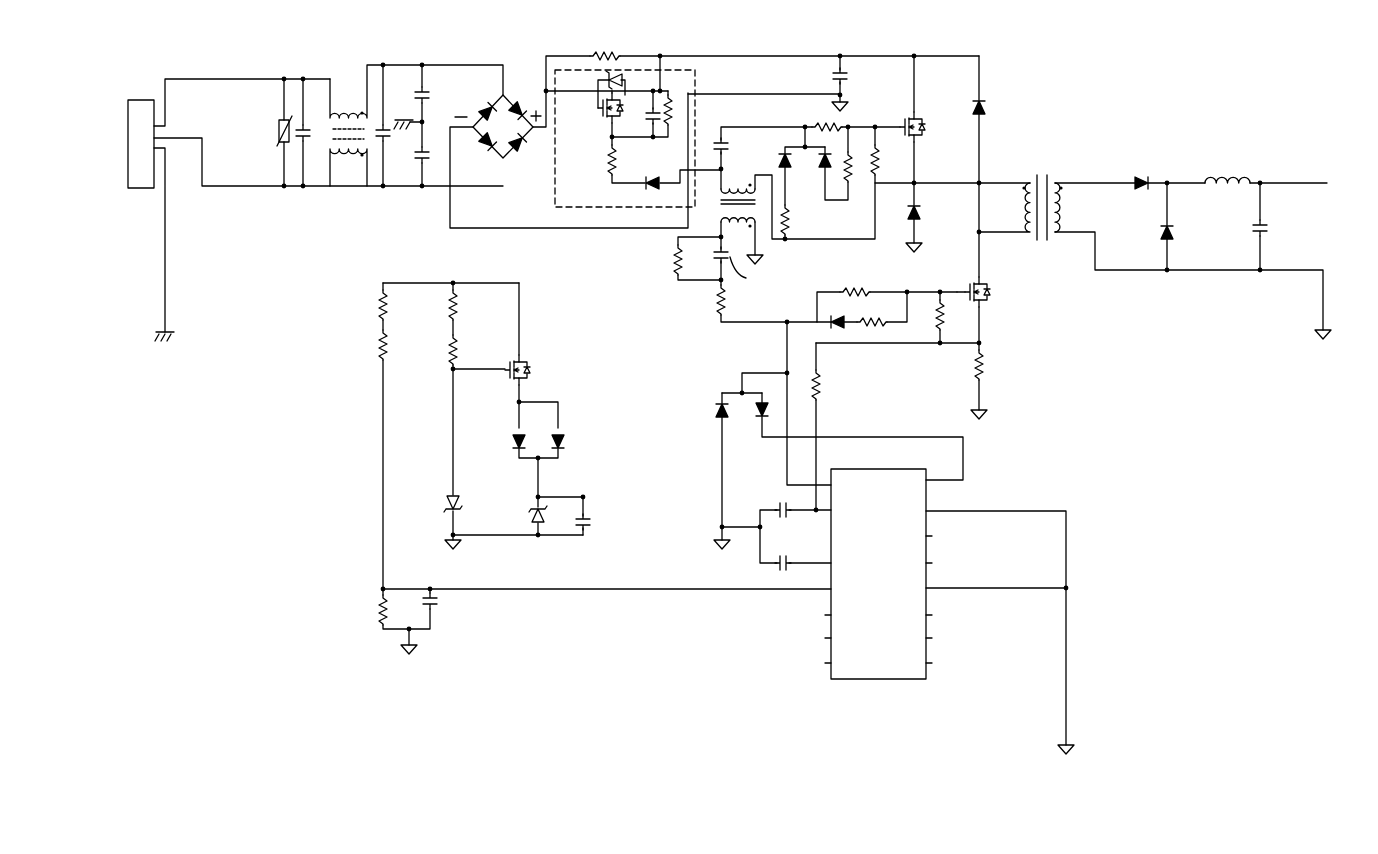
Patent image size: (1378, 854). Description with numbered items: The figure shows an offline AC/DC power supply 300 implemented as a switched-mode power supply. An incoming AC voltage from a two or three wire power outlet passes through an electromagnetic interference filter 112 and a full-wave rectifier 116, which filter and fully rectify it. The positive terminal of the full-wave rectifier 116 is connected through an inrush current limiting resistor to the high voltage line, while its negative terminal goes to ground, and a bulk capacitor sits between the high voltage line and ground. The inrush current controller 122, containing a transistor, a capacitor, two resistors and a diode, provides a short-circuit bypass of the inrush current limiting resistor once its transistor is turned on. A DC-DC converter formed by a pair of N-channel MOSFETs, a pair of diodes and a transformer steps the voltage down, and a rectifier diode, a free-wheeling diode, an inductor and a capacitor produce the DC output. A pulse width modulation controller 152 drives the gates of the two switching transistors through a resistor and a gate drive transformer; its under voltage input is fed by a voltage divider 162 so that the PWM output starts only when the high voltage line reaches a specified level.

The electromagnetic interference (EMI) filter 112 is at (422, 197).
The full-wave rectifier 116 is at (529, 160).
The inrush current controller 122 is at (596, 208).
The pulse width modulation (PWM) controller 152 is at (898, 468).
The voltage divider 162 is at (365, 645).
The offline AC/DC power supply 300 is at (549, 690).